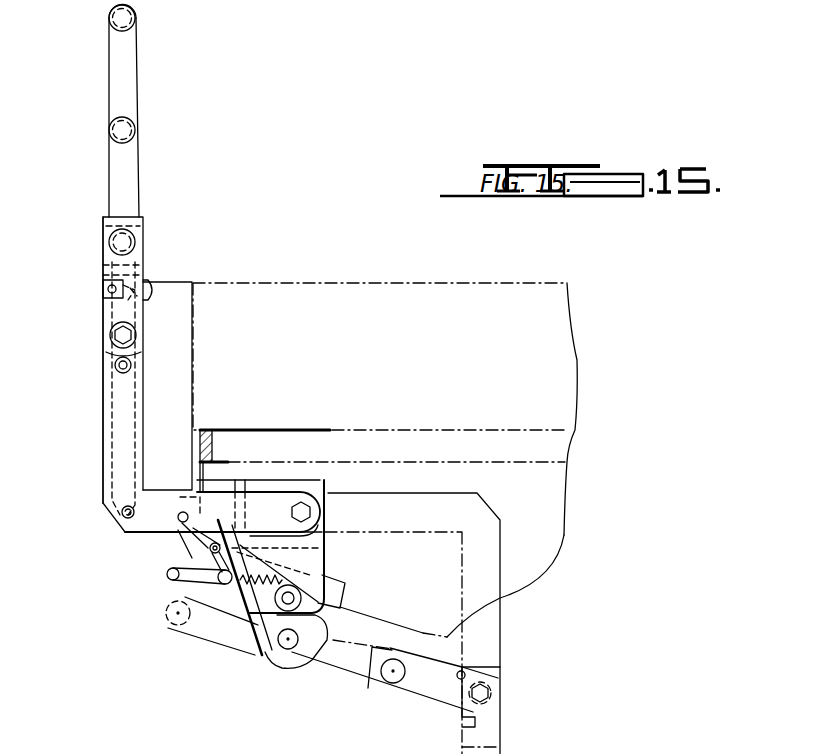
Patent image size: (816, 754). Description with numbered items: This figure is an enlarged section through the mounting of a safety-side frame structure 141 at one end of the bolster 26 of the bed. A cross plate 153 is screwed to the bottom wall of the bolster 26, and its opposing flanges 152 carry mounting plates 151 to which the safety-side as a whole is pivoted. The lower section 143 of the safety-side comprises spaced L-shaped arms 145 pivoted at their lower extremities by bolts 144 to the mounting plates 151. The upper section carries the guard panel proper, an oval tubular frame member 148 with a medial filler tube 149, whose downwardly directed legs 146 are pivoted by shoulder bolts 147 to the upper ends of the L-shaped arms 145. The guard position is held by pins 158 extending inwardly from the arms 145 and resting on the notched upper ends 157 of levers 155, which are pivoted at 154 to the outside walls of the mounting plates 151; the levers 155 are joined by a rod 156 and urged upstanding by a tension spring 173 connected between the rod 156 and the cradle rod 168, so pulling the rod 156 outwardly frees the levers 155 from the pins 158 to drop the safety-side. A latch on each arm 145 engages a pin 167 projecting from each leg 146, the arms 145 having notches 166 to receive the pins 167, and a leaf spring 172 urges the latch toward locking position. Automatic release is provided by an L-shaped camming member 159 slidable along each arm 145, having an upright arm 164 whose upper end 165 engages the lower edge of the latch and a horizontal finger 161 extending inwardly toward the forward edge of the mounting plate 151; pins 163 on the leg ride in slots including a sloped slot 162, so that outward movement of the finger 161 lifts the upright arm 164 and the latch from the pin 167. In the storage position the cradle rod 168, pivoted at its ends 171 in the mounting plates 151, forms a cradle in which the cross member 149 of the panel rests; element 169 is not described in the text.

The bolster 26 is at (437, 573).
The safety-side frame structure 141 is at (144, 62).
The lower section 143 is at (94, 428).
The bolts 144 is at (306, 496).
The L-shaped arms 145 is at (103, 451).
The legs 146 is at (142, 238).
The shoulder bolts 147 is at (112, 336).
The tubular frame member 148 is at (128, 97).
The filler tube 149 is at (135, 131).
The mounting plates 151 is at (305, 560).
The flanges 152 is at (345, 592).
The cross plate 153 is at (365, 611).
The lever pivot 154 is at (208, 558).
The levers 155 is at (168, 606).
The rod 156 is at (185, 581).
The notched upper ends 157 is at (217, 476).
The pins 158 is at (178, 520).
The camming member 159 is at (146, 419).
The finger 161 is at (160, 503).
The slot 162 is at (112, 527).
The pins 163 is at (122, 510).
The upright arm 164 is at (118, 395).
The upper end 165 is at (150, 305).
The notches 166 is at (150, 285).
The pin 167 is at (150, 306).
The cradle rod 168 is at (290, 680).
The link arm 169 is at (250, 637).
The ends 171 is at (300, 592).
The leaf spring 172 is at (100, 267).
The tension spring 173 is at (327, 518).